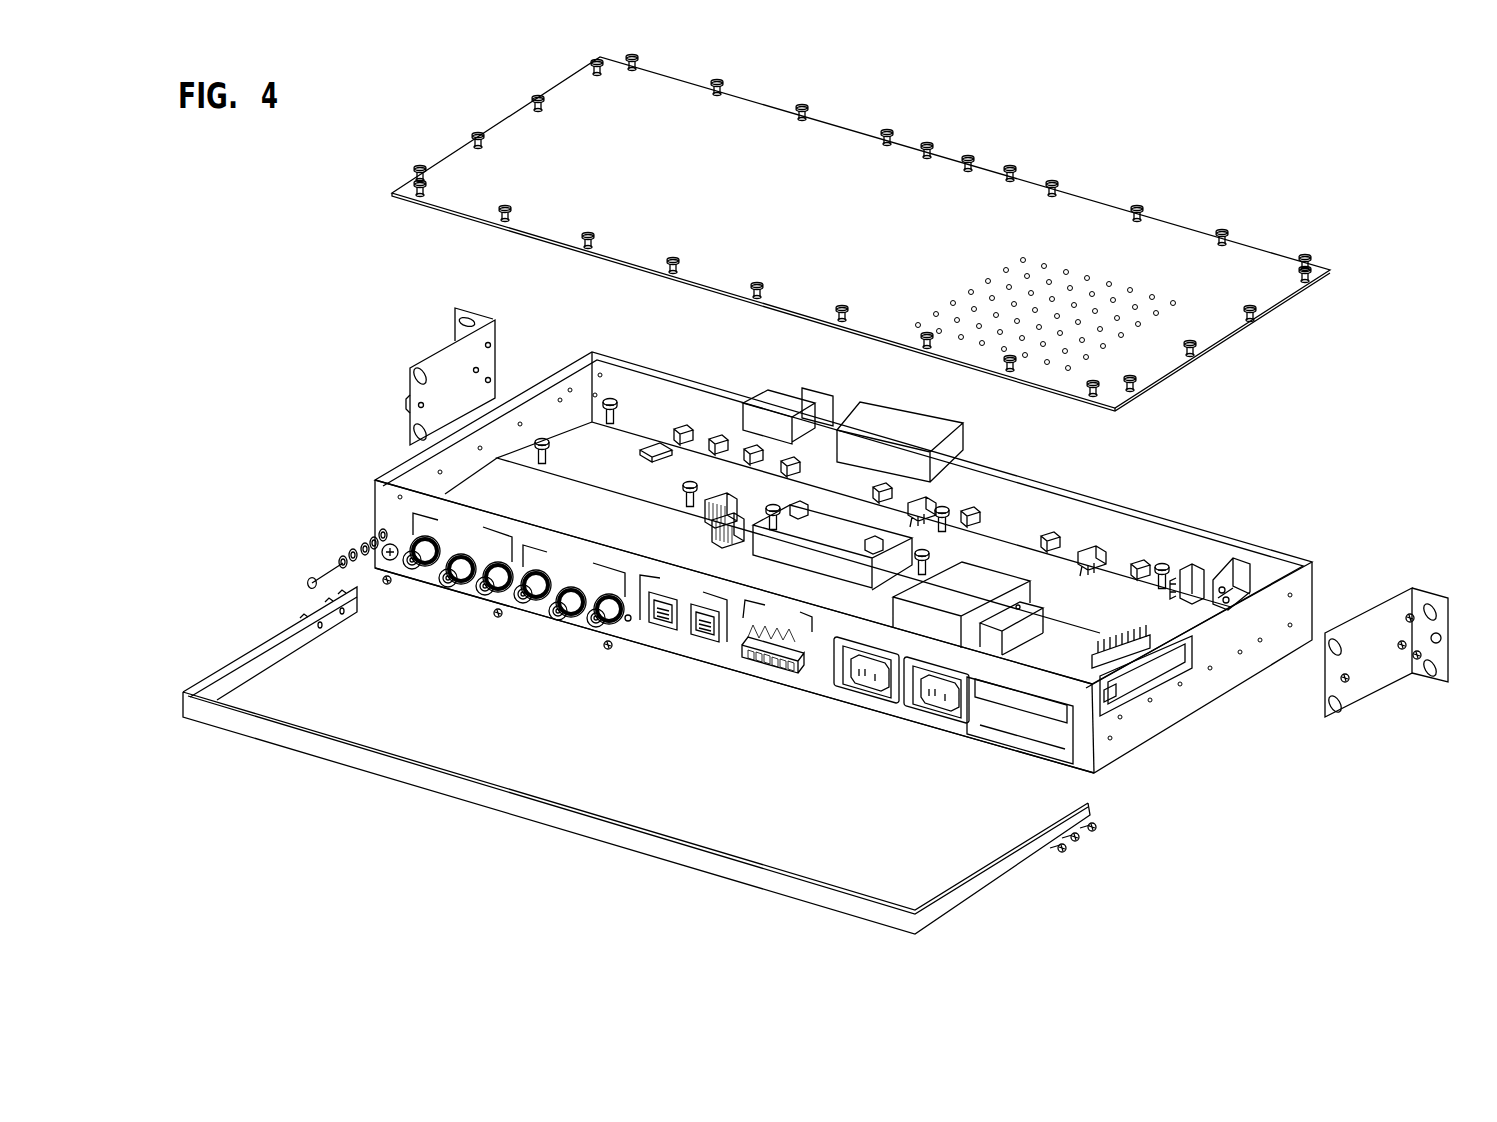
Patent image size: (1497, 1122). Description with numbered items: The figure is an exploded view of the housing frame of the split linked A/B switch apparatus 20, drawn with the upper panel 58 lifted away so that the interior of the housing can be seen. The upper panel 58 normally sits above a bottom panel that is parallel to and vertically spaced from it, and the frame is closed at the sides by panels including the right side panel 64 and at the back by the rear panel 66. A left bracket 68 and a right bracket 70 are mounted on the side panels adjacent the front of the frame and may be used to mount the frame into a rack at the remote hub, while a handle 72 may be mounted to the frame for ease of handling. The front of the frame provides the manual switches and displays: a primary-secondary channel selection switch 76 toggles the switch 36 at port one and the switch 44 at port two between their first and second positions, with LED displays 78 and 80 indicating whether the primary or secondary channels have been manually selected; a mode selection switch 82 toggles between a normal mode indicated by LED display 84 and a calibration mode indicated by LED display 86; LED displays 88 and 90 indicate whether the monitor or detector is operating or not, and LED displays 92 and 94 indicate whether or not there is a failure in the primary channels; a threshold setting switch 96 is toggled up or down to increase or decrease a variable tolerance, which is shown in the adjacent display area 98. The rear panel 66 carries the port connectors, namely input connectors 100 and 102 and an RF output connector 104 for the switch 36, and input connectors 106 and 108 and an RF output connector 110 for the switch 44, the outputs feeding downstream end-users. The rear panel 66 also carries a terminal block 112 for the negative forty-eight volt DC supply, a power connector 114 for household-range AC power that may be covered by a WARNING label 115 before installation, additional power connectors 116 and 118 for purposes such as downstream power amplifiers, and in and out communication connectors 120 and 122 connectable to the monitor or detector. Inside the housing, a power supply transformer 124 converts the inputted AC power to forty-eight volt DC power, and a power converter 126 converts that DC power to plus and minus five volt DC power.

The switch apparatus 20 is at (1325, 220).
The switch at port 1 36 is at (470, 537).
The switch at port 2 44 is at (590, 560).
The upper panel 58 is at (1015, 205).
The right side panel 64 is at (1198, 686).
The rear panel 66 is at (820, 690).
The left bracket 68 is at (450, 358).
The right bracket 70 is at (1436, 622).
The handle 72 is at (735, 873).
The primary-secondary channel selection switch 76 is at (1092, 548).
The LED display for primary channels 78 is at (1140, 562).
The LED display for secondary channels 80 is at (1052, 533).
The mode selection switch 82 is at (925, 500).
The LED display for normal mode 84 is at (972, 510).
The LED display for calibration mode 86 is at (882, 485).
The LED display for monitor operating 88 is at (792, 460).
The LED display for monitor not operating 90 is at (755, 448).
The LED display for no primary channel failure 92 is at (718, 438).
The LED display for primary channel failure 94 is at (683, 428).
The threshold setting switch 96 is at (1195, 570).
The display area 98 is at (1238, 572).
The input connector 100 is at (412, 566).
The input connector 102 is at (448, 584).
The output connector (RF) 104 is at (485, 592).
The input connector 106 is at (523, 600).
The input connector 108 is at (558, 617).
The output connector (RF) 110 is at (598, 624).
The terminal block 112 is at (768, 668).
The power connector 114 is at (983, 742).
The WARNING label 115 is at (1070, 746).
The additional power connector 116 is at (928, 710).
The additional power connector 118 is at (863, 690).
The in communication connector 120 is at (665, 622).
The out communication connector 122 is at (705, 634).
The power supply transformer 124 is at (988, 580).
The power converter 126 is at (1128, 648).